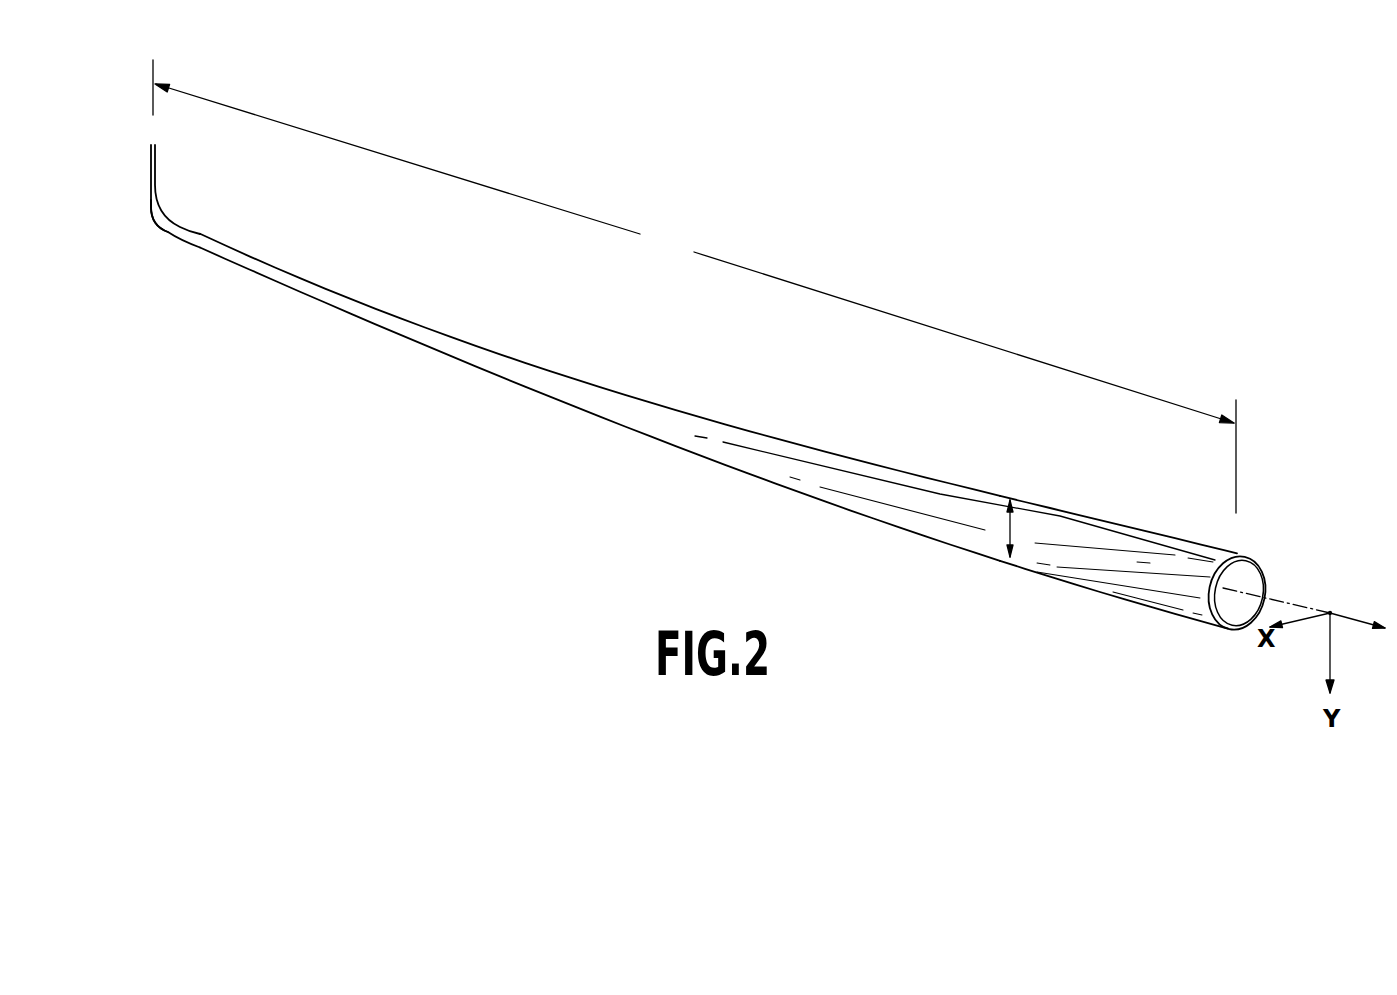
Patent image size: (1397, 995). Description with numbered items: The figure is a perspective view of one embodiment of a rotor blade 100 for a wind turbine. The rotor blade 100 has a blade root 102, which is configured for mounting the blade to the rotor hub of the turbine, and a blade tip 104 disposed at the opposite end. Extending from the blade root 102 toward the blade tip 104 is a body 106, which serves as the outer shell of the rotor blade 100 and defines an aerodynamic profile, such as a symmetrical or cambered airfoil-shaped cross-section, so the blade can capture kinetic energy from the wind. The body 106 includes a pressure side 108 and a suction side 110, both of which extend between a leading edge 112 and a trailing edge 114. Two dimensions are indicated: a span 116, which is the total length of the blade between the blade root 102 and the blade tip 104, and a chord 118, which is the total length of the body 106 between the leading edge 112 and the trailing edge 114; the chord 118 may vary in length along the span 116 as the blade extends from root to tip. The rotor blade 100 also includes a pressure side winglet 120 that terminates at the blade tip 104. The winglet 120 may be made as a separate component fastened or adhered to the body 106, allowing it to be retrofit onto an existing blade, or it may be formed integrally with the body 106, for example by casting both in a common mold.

The rotor blade 100 is at (1020, 243).
The blade root 102 is at (1265, 573).
The blade tip 104 is at (150, 144).
The body 106 is at (682, 428).
The pressure side 108 is at (983, 514).
The suction side 110 is at (1145, 596).
The leading edge 112 is at (830, 453).
The trailing edge 114 is at (731, 466).
The span 116 is at (694, 286).
The chord 118 is at (1003, 533).
The pressure side winglet 120 is at (163, 225).